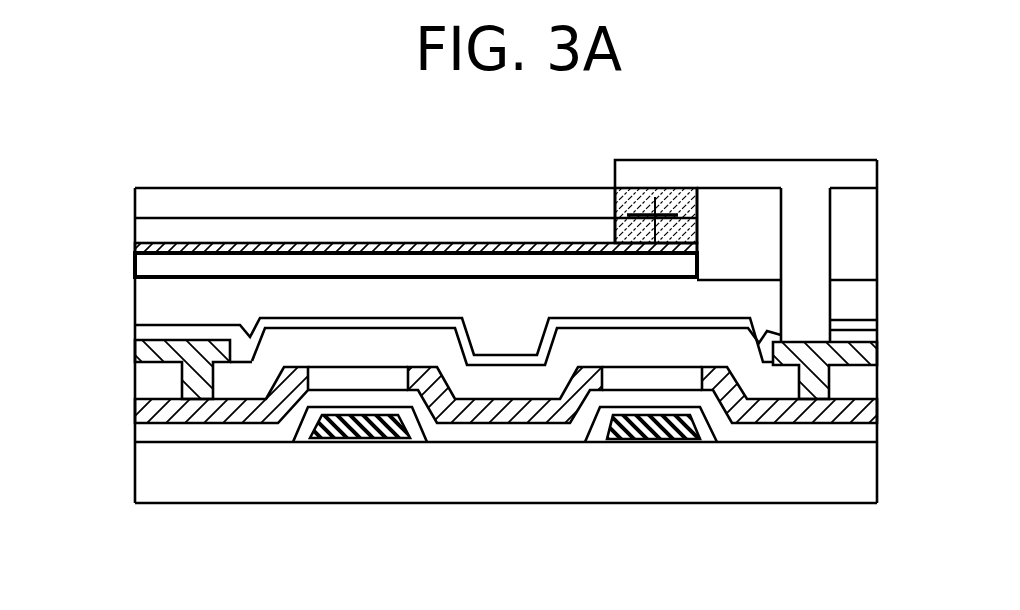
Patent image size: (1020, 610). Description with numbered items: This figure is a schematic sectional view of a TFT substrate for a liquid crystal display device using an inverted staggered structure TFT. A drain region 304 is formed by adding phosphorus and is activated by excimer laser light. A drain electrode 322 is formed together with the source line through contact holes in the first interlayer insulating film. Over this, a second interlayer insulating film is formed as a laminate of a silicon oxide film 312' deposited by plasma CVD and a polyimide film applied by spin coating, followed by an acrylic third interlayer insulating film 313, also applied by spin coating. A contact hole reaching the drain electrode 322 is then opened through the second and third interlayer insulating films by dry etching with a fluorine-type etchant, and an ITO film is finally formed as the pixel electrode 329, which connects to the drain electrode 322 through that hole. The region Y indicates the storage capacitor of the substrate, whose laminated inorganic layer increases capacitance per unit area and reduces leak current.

The drain region 304 is at (793, 414).
The silicon oxide film 312' is at (375, 285).
The third interlayer insulating film 313 is at (495, 205).
The drain electrode 322 is at (858, 338).
The pixel electrode 329 is at (793, 175).
The region Y is at (637, 213).